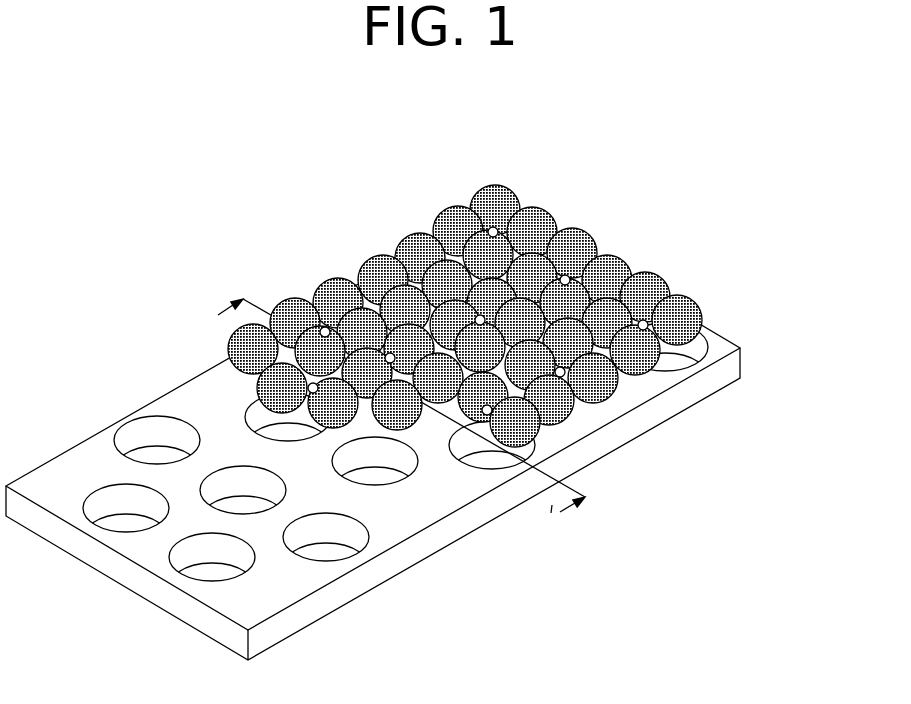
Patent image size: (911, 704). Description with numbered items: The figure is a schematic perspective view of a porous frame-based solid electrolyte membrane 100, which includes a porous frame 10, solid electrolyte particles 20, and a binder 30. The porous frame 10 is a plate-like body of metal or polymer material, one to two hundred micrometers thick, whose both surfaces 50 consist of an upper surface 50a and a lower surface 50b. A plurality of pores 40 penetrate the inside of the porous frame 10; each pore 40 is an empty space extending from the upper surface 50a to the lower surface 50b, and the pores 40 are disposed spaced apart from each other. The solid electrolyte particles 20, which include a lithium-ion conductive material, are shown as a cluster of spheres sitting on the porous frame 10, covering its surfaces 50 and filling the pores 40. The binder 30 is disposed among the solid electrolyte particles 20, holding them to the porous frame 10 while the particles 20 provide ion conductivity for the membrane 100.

The solid electrolyte membrane 100 is at (438, 380).
The porous frame 10 is at (438, 432).
The solid electrolyte particles 20 is at (540, 226).
The binder 30 is at (565, 277).
The pore 40 is at (132, 433).
The both surfaces 50 is at (438, 432).
The upper surface 50a is at (720, 343).
The lower surface 50b is at (720, 388).